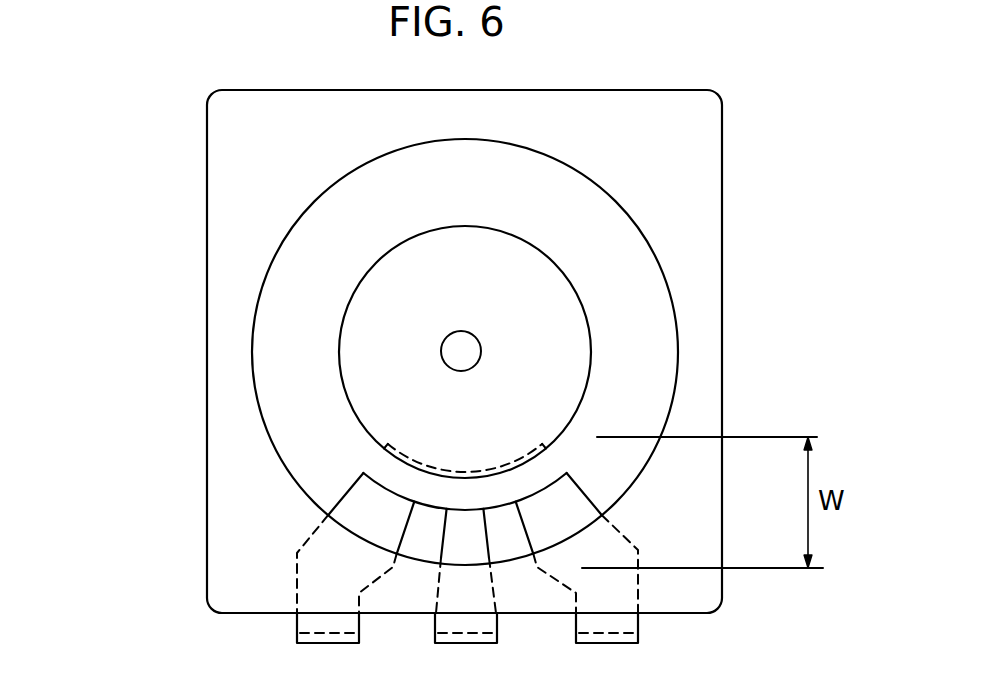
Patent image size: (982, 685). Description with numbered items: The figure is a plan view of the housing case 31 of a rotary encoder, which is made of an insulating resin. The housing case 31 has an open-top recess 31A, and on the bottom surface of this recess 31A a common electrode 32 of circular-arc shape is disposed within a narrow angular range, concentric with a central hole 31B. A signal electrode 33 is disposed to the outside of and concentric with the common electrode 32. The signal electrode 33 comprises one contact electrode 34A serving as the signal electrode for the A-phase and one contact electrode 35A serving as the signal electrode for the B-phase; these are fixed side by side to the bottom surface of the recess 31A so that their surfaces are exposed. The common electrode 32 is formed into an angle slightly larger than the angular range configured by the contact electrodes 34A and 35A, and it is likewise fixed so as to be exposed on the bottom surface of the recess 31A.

The housing case 31 is at (217, 127).
The open-top recess 31A is at (593, 203).
The central hole 31B is at (457, 345).
The common electrode 32 is at (383, 458).
The signal electrode 33 is at (454, 505).
The contact electrode 34A is at (363, 502).
The contact electrode 35A is at (570, 497).